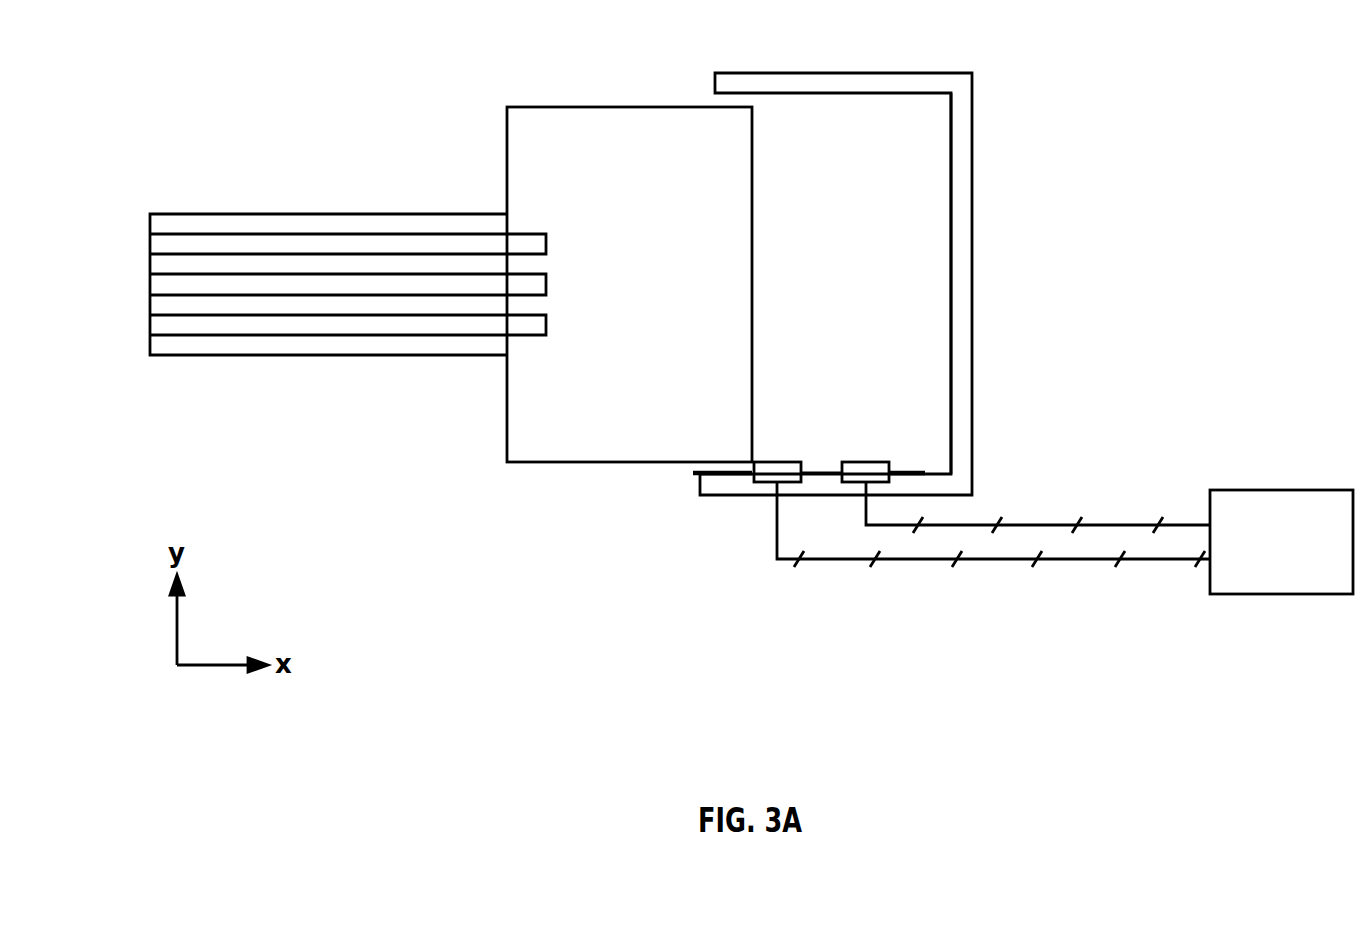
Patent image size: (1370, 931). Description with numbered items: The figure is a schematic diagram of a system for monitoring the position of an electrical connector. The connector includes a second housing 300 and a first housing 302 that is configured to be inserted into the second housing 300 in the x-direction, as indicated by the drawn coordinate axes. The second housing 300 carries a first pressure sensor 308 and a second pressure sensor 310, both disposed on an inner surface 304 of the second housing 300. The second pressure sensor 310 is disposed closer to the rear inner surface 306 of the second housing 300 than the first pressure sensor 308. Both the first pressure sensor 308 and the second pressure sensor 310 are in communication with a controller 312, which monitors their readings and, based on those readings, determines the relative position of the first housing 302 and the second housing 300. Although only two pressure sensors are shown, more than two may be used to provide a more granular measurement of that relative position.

The second housing 300 is at (972, 93).
The first housing 302 is at (530, 107).
The inner surface 304 is at (913, 468).
The rear inner surface 306 is at (960, 155).
The first pressure sensor 308 is at (772, 462).
The second pressure sensor 310 is at (865, 462).
The controller 312 is at (1302, 557).